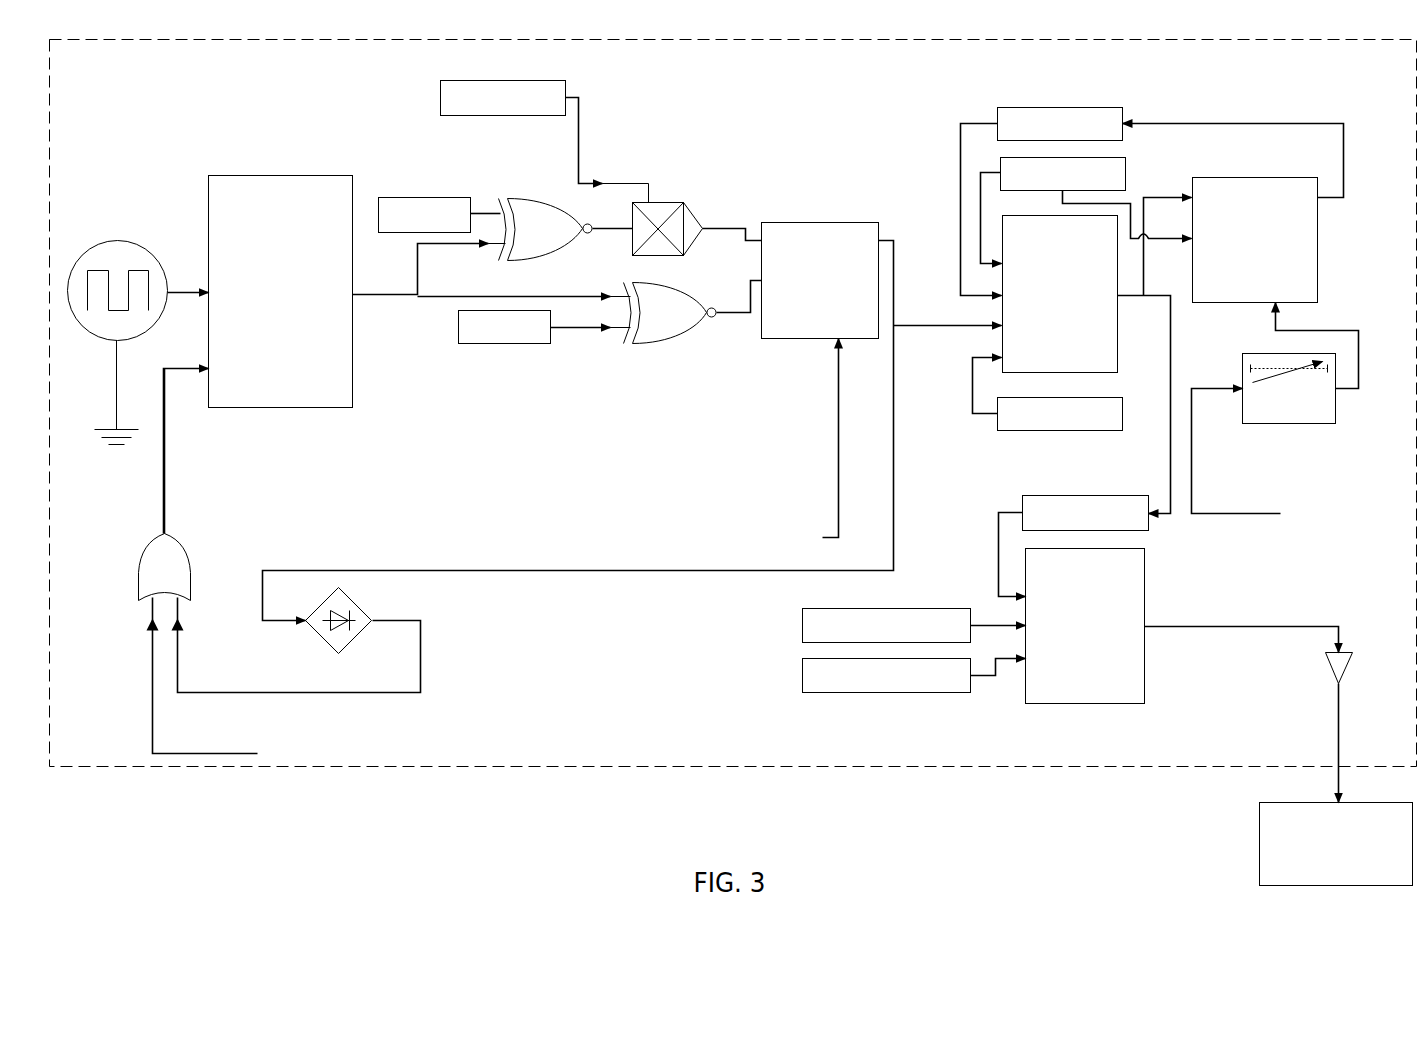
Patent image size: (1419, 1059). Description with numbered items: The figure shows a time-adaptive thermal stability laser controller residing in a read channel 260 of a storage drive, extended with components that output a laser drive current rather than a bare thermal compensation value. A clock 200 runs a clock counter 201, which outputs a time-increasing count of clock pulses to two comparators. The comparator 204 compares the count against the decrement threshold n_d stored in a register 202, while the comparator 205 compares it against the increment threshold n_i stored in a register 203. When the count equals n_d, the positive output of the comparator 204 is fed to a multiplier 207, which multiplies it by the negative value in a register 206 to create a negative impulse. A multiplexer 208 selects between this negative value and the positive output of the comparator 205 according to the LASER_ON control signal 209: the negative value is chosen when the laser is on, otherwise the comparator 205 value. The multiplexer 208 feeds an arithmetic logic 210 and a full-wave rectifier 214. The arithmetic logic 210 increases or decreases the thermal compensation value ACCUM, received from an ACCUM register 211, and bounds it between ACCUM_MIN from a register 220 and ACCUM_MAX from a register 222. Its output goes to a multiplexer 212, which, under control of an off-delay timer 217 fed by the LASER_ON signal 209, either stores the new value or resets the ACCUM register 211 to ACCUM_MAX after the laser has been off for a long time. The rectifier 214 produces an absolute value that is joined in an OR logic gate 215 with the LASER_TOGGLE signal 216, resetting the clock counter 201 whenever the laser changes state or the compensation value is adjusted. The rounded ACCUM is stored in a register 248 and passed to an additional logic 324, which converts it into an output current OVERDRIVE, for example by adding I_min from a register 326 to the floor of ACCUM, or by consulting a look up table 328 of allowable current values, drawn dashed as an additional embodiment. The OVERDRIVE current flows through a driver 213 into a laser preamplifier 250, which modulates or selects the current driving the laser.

The clock 200 is at (113, 228).
The clock counter 201 is at (397, 355).
The register 202 is at (408, 195).
The register 203 is at (512, 358).
The comparator 204 is at (528, 195).
The comparator 205 is at (662, 350).
The register 206 is at (440, 97).
The multiplier 207 is at (672, 200).
The multiplexer 208 is at (804, 216).
The control signal LASER_ON 209 is at (805, 520).
The arithmetic logic 210 is at (1097, 356).
The ACCUM register 211 is at (1044, 100).
The multiplexer 212 is at (1241, 256).
The driver 213 is at (1324, 672).
The full-wave rectifier 214 is at (362, 642).
The OR logic gate 215 is at (192, 580).
The LASER_TOGGLE signal 216 is at (420, 752).
The off-delay timer 217 is at (1289, 389).
The register 220 is at (1068, 433).
The register 222 is at (1130, 160).
The register 248 is at (1117, 494).
The laser preamplifier 250 is at (1258, 858).
The read channel 260 is at (940, 770).
The additional logic 324 is at (1182, 626).
The I_min register 326 is at (800, 627).
The look up table (LUT) 328 is at (800, 675).